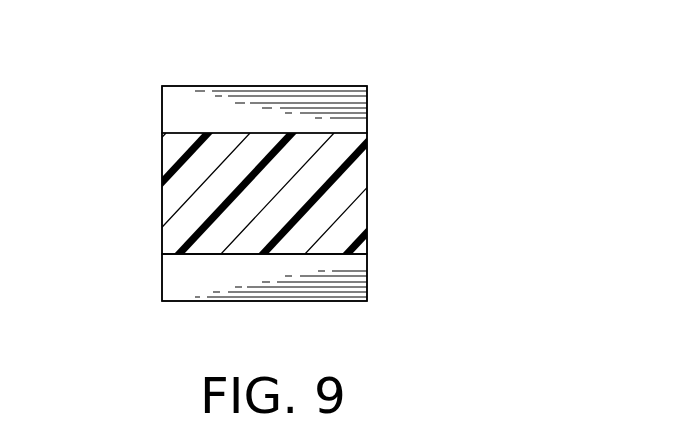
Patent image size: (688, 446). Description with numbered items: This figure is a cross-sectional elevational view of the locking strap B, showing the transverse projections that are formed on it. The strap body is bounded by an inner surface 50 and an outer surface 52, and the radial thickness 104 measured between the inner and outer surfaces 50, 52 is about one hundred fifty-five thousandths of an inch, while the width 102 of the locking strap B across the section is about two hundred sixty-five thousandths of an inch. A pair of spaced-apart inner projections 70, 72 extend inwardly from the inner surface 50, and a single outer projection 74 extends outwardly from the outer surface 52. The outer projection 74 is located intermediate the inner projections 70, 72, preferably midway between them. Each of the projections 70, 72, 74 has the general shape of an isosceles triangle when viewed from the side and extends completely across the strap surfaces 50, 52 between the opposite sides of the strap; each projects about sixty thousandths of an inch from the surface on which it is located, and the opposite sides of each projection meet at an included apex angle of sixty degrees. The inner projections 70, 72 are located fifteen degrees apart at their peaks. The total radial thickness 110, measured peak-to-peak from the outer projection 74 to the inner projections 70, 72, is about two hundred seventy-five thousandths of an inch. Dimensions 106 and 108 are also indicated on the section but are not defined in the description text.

The locking strap B is at (148, 185).
The outer transverse projection 74 is at (185, 86).
The outer surface 52 is at (175, 132).
The inner surface 50 is at (180, 254).
The inner transverse projection 70 is at (219, 298).
The inner transverse projection 72 is at (195, 303).
The width of locking strap 102 is at (162, 29).
The radial thickness 104 is at (375, 134).
The lower layer thickness dimension 106 is at (468, 303).
The upper layer thickness dimension 108 is at (375, 87).
The total radial thickness 110 is at (375, 303).